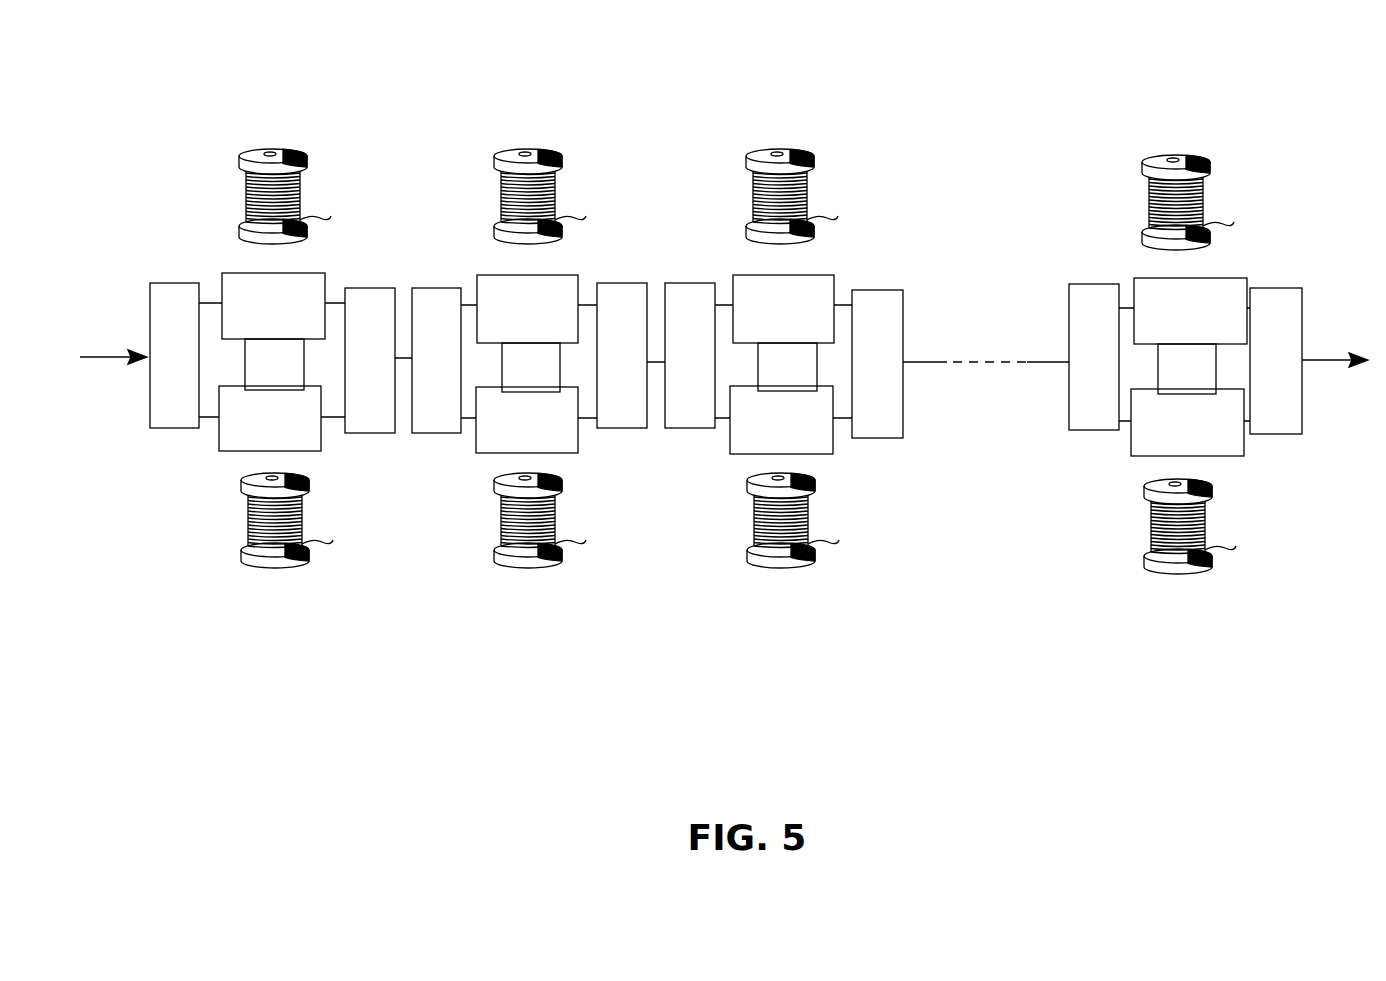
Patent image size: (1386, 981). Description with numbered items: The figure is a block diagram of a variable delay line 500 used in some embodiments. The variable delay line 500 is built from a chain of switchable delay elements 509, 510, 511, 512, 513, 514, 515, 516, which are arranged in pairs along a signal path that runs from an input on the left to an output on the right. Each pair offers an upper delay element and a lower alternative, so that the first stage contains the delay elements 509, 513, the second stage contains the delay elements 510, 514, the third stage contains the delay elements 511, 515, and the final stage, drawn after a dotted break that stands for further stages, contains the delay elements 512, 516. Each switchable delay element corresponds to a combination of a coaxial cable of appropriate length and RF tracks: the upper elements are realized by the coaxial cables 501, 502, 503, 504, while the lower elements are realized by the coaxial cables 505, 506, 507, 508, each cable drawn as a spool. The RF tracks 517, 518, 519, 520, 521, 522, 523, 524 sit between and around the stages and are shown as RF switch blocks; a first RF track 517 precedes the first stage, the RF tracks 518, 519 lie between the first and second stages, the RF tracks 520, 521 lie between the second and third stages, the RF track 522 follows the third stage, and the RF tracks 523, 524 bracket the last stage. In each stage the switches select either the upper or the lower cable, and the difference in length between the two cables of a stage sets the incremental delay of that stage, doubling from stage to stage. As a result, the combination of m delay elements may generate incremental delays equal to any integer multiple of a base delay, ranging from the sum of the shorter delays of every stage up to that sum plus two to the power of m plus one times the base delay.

The binary delay line system 500 is at (193, 768).
The coaxial cable 501 is at (268, 137).
The coaxial cable 502 is at (520, 137).
The coaxial cable 503 is at (777, 137).
The coaxial cable 504 is at (1172, 137).
The coaxial cable 505 is at (242, 518).
The coaxial cable 506 is at (492, 518).
The coaxial cable 507 is at (742, 518).
The coaxial cable 508 is at (1147, 518).
The switchable delay element 509 is at (223, 262).
The switchable delay element 510 is at (475, 262).
The switchable delay element 511 is at (733, 262).
The switchable delay element 512 is at (1127, 262).
The switchable delay element 513 is at (225, 465).
The switchable delay element 514 is at (475, 465).
The switchable delay element 515 is at (725, 467).
The switchable delay element 516 is at (1127, 467).
The RF track 517 is at (175, 278).
The RF track 518 is at (362, 277).
The RF track 519 is at (423, 273).
The RF track 520 is at (612, 277).
The RF track 521 is at (683, 277).
The RF track 522 is at (870, 277).
The RF track 523 is at (1078, 277).
The RF track 524 is at (1287, 277).